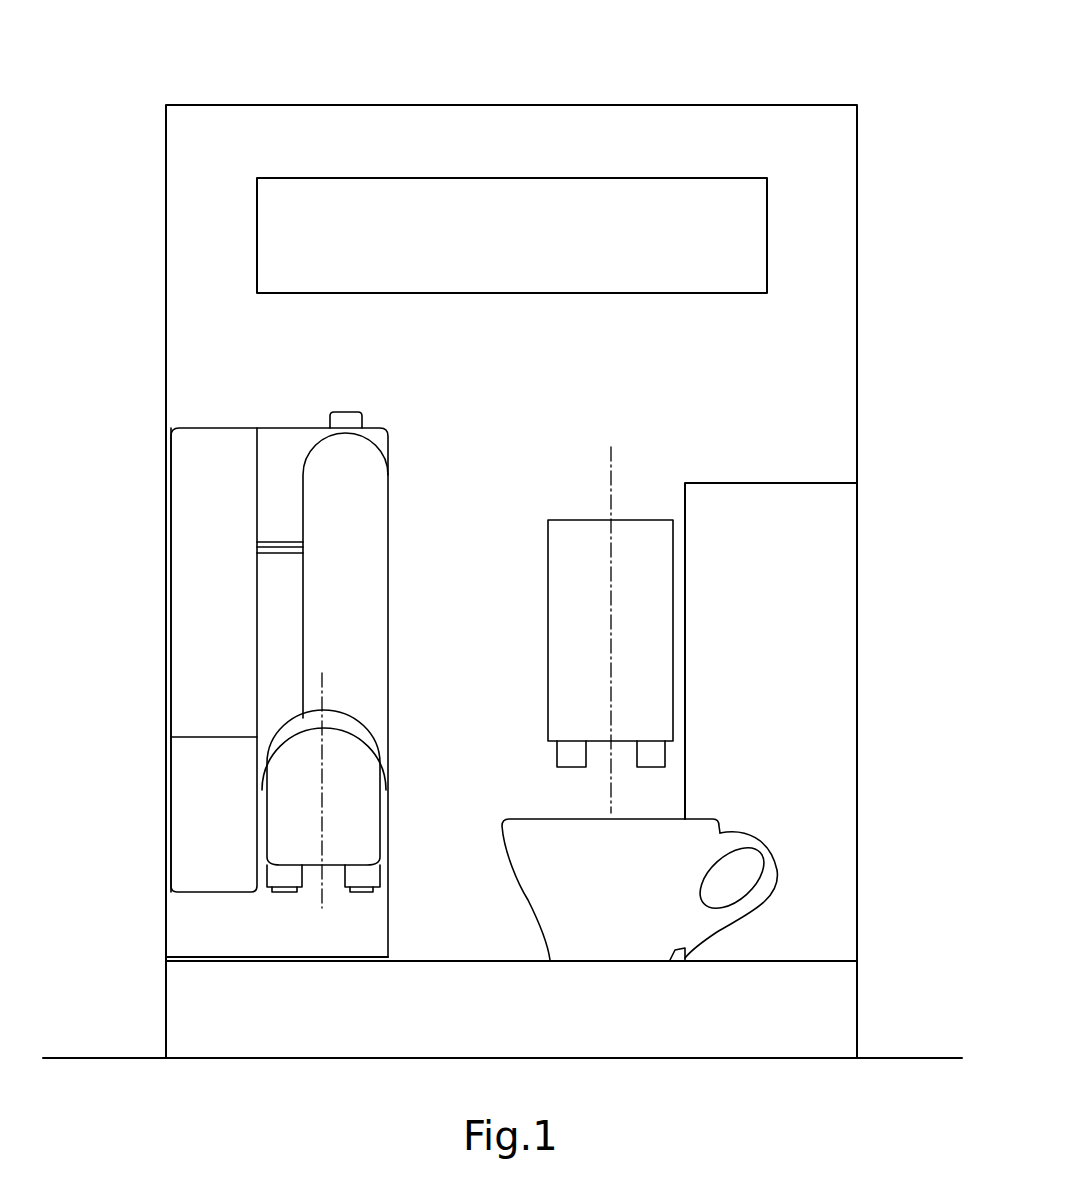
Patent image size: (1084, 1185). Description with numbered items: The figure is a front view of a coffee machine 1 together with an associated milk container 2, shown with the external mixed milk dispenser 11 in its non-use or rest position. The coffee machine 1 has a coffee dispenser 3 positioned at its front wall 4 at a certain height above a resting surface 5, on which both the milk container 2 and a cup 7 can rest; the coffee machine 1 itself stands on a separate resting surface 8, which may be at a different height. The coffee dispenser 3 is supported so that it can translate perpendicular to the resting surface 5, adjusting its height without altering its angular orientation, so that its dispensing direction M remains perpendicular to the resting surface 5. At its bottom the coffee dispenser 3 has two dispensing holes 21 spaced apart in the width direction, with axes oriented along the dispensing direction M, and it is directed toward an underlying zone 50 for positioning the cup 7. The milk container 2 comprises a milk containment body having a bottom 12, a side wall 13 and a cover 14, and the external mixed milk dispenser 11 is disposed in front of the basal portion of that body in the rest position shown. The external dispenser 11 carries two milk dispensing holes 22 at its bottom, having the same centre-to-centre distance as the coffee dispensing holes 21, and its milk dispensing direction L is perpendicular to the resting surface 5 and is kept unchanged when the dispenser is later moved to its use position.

The coffee machine 1 is at (748, 84).
The milk container 2 is at (408, 506).
The coffee dispenser 3 is at (635, 528).
The front wall 4 is at (600, 382).
The resting surface 5 is at (478, 960).
The cup 7 is at (633, 897).
The resting surface for resting the coffee machine 8 is at (925, 1057).
The external mixed milk dispenser 11 is at (280, 820).
The bottom 12 is at (197, 957).
The side wall 13 is at (289, 627).
The cover 14 is at (283, 490).
The dispensing holes 21 is at (572, 767).
The dispensing holes 22 is at (280, 892).
The zone for positioning cups 50 is at (582, 811).
The milk dispensing direction L is at (323, 693).
The dispensing direction M is at (610, 455).